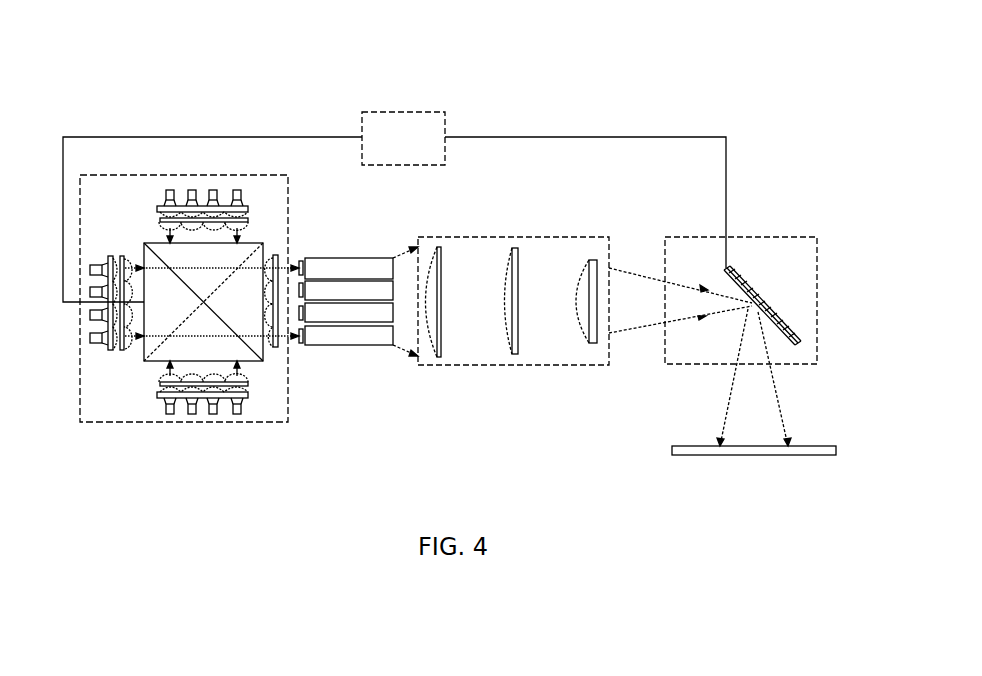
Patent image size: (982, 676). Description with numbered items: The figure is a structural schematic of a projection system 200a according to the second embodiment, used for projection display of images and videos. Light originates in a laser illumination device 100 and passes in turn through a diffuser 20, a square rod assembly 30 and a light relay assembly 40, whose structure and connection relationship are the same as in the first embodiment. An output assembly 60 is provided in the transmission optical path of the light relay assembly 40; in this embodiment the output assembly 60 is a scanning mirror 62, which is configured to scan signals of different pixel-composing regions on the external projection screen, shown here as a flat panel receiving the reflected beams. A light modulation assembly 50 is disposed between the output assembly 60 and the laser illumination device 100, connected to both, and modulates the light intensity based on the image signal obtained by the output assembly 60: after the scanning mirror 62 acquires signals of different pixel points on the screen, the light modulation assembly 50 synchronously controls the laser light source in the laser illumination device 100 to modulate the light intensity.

The projection system 200a is at (373, 62).
The laser illumination device 100 is at (155, 423).
The diffuser 20 is at (302, 347).
The square rod assembly 30 is at (350, 337).
The light relay assembly 40 is at (497, 366).
The light modulation assembly 50 is at (403, 138).
The output assembly 60 is at (762, 237).
The scanning mirror 62 is at (768, 300).